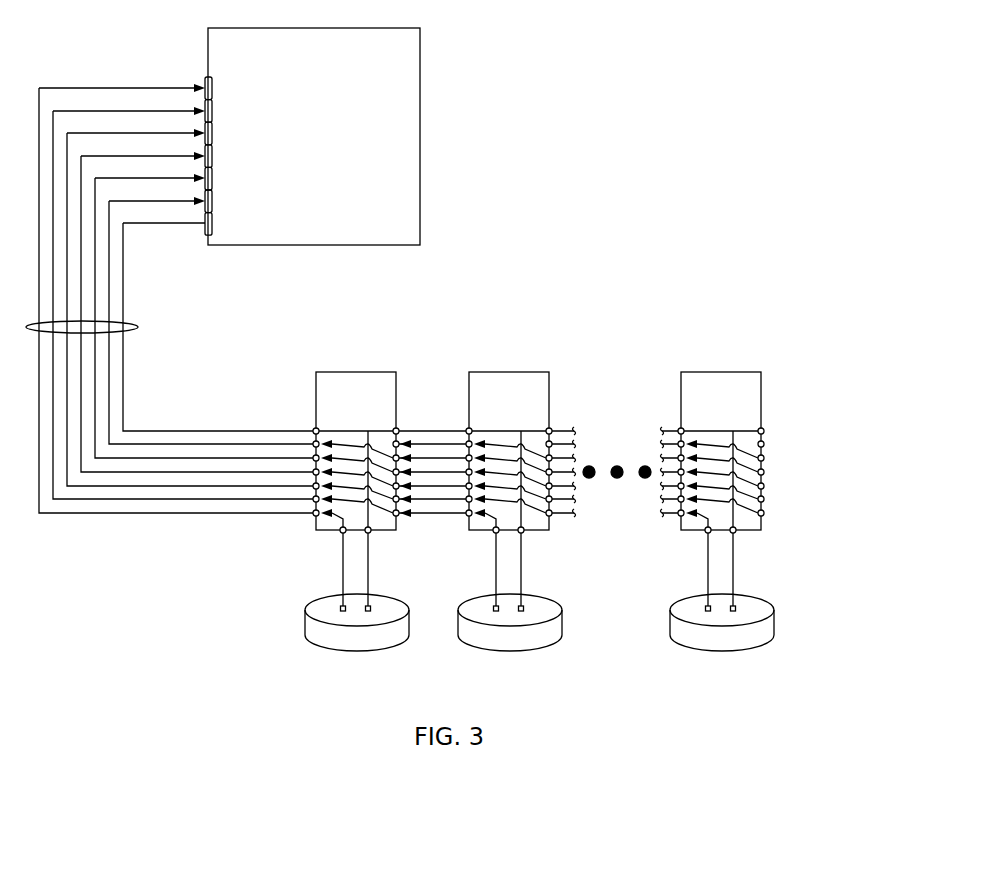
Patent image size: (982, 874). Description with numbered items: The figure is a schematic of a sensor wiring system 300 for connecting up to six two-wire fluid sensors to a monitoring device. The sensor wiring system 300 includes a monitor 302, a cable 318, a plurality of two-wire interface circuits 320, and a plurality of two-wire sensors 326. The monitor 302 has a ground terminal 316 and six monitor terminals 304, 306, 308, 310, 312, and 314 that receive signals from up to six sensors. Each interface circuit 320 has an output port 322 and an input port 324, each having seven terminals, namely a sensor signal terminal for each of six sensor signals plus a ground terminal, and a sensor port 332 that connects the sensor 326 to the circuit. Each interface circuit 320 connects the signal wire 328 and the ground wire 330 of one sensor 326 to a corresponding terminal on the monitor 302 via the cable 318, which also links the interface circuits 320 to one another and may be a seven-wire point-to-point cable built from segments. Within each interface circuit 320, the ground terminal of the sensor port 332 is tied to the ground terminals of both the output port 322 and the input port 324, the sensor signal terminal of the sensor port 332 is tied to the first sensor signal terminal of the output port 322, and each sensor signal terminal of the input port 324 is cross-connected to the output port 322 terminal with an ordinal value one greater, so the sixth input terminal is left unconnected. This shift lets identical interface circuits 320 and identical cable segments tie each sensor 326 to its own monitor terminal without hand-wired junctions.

The sensor wiring system 300 is at (855, 35).
The monitor 302 is at (314, 136).
The terminal 1 (monitor terminal) 304 is at (215, 295).
The terminal 2 (monitor terminal) 306 is at (222, 299).
The terminal 3 (monitor terminal) 308 is at (229, 304).
The terminal 4 (monitor terminal) 310 is at (236, 308).
The terminal 5 (monitor terminal) 312 is at (243, 312).
The terminal 6 (monitor terminal) 314 is at (250, 317).
The ground terminal 316 is at (232, 322).
The cable 318 is at (138, 326).
The two-wire interface circuit 320 is at (551, 451).
The output port 322 is at (678, 425).
The input port 324 is at (399, 529).
The two-wire sensor 326 is at (356, 648).
The signal wire 328 is at (343, 574).
The ground wire 330 is at (368, 589).
The sensor port 332 is at (327, 539).